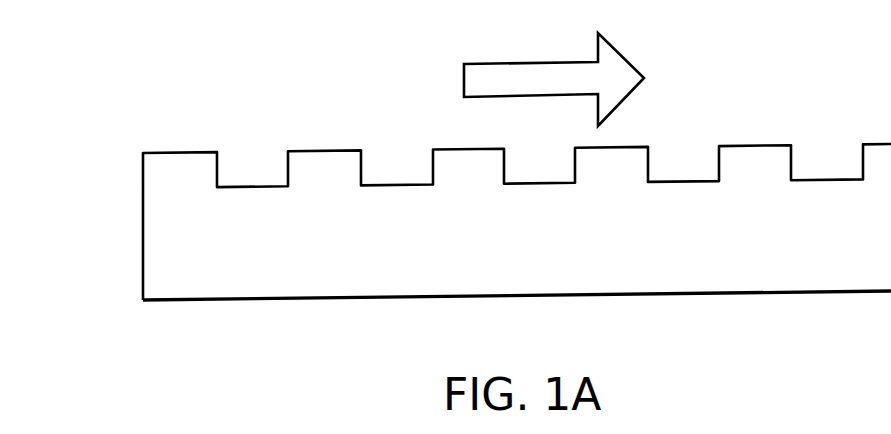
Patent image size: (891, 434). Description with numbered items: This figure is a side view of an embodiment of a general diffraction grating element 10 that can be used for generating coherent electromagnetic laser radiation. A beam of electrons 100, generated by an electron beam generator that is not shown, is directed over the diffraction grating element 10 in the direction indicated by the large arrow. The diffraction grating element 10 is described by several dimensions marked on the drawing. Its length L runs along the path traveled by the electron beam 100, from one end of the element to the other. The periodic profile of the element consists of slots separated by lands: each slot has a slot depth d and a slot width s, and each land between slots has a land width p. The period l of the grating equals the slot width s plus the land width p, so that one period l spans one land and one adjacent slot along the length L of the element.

The diffraction grating element 10 is at (783, 47).
The beam of electrons 100 is at (620, 51).
The slot depth d is at (135, 188).
The land width p is at (361, 282).
The slot width s is at (433, 193).
The period l is at (426, 277).
The length L is at (145, 307).